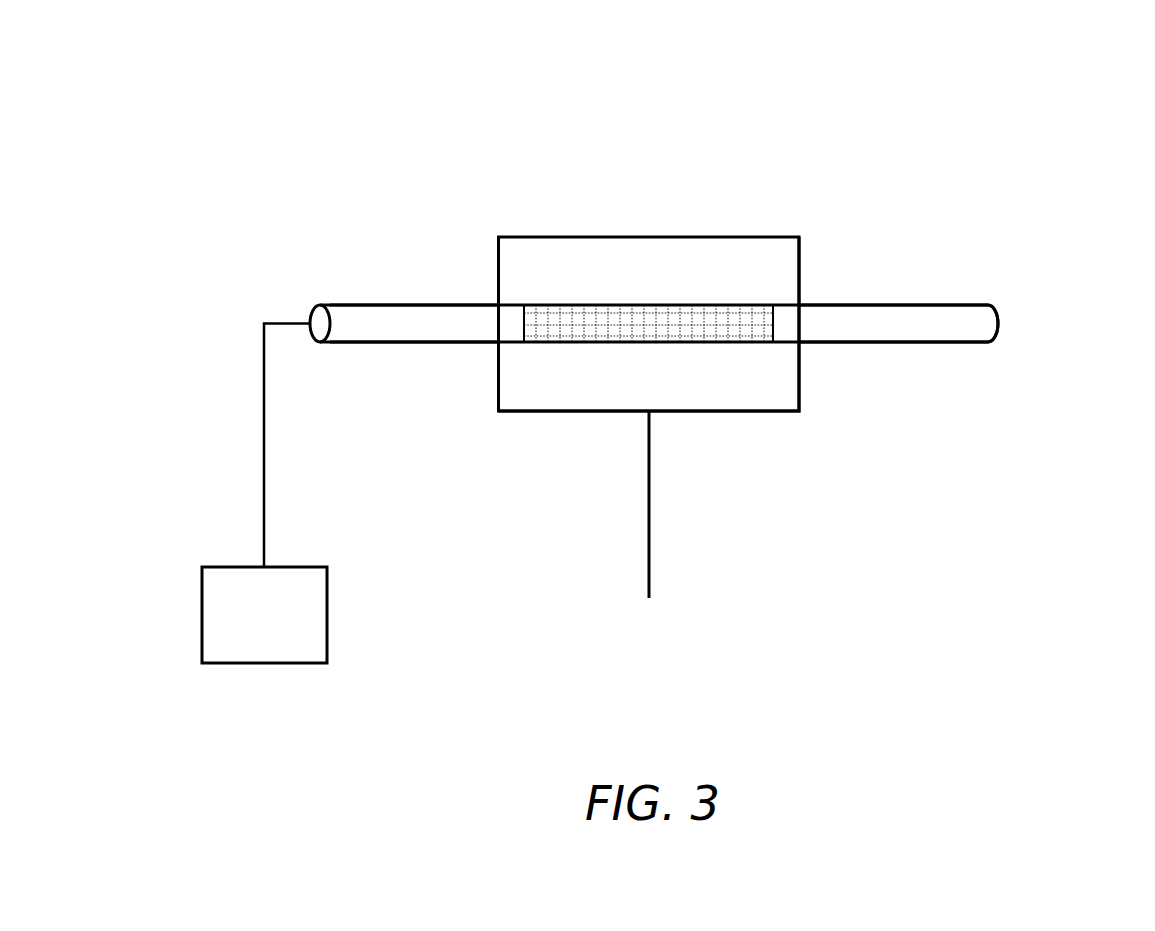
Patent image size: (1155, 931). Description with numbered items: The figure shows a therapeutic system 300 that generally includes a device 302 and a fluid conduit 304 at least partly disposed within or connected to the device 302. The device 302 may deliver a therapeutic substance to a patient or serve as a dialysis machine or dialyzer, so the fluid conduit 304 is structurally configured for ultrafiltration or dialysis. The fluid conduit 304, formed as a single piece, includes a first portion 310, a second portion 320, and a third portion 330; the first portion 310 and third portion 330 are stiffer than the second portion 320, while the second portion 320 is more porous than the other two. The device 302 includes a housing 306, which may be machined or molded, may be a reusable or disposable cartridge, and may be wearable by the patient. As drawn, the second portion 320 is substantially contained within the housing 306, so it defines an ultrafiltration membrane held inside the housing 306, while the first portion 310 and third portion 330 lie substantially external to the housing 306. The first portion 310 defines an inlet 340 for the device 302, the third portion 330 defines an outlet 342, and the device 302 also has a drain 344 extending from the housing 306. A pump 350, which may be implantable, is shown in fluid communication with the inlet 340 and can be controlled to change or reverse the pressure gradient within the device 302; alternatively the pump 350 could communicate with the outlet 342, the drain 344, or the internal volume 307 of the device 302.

The therapeutic system 300 is at (270, 128).
The device 302 is at (813, 218).
The fluid conduit 304 is at (439, 353).
The housing 306 is at (757, 411).
The internal volume 307 is at (515, 390).
The first portion 310 is at (407, 313).
The second portion 320 is at (590, 305).
The third portion 330 is at (936, 317).
The inlet 340 is at (312, 312).
The outlet 342 is at (998, 312).
The drain 344 is at (650, 590).
The pump 350 is at (286, 629).